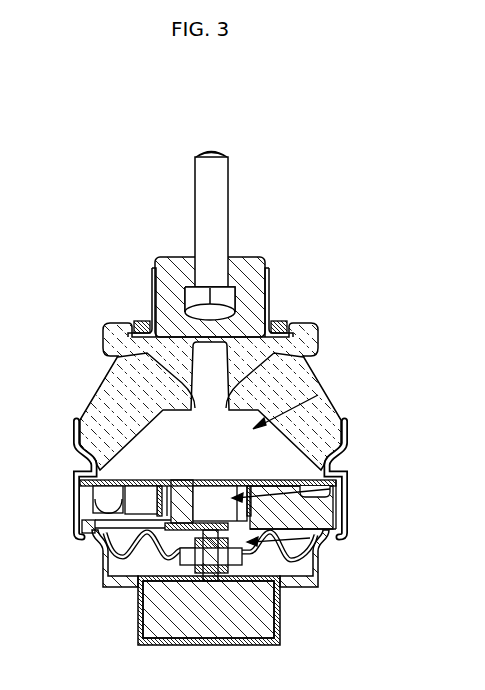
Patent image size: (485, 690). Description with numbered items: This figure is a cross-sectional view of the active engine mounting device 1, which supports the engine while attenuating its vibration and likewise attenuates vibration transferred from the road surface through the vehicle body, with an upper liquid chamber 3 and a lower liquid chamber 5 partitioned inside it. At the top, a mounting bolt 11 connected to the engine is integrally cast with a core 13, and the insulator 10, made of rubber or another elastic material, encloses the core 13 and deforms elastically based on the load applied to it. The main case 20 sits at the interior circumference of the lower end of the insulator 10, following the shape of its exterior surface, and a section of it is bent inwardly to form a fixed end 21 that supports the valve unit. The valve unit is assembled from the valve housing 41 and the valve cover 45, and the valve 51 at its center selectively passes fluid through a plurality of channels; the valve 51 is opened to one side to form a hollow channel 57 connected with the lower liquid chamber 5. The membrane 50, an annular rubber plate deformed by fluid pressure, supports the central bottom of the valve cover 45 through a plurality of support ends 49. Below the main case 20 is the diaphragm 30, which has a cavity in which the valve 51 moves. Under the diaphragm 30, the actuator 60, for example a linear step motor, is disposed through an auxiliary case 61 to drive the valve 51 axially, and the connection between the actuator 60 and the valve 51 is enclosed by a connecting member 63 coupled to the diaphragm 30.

The active engine mounting device 1 is at (211, 90).
The upper liquid chamber 3 is at (318, 395).
The lower liquid chamber 5 is at (322, 544).
The insulator 10 is at (314, 335).
The mounting bolt 11 is at (203, 184).
The core 13 is at (252, 258).
The main case 20 is at (345, 433).
The fixed end 21 is at (84, 536).
The diaphragm 30 is at (122, 565).
The valve housing 41 is at (330, 516).
The valve cover 45 is at (80, 472).
The support end 49 is at (158, 495).
The membrane 50 is at (98, 517).
The valve 51 is at (138, 503).
The hollow channel 57 is at (318, 511).
The actuator 60 is at (272, 597).
The auxiliary case 61 is at (280, 623).
The connecting member 63 is at (203, 577).